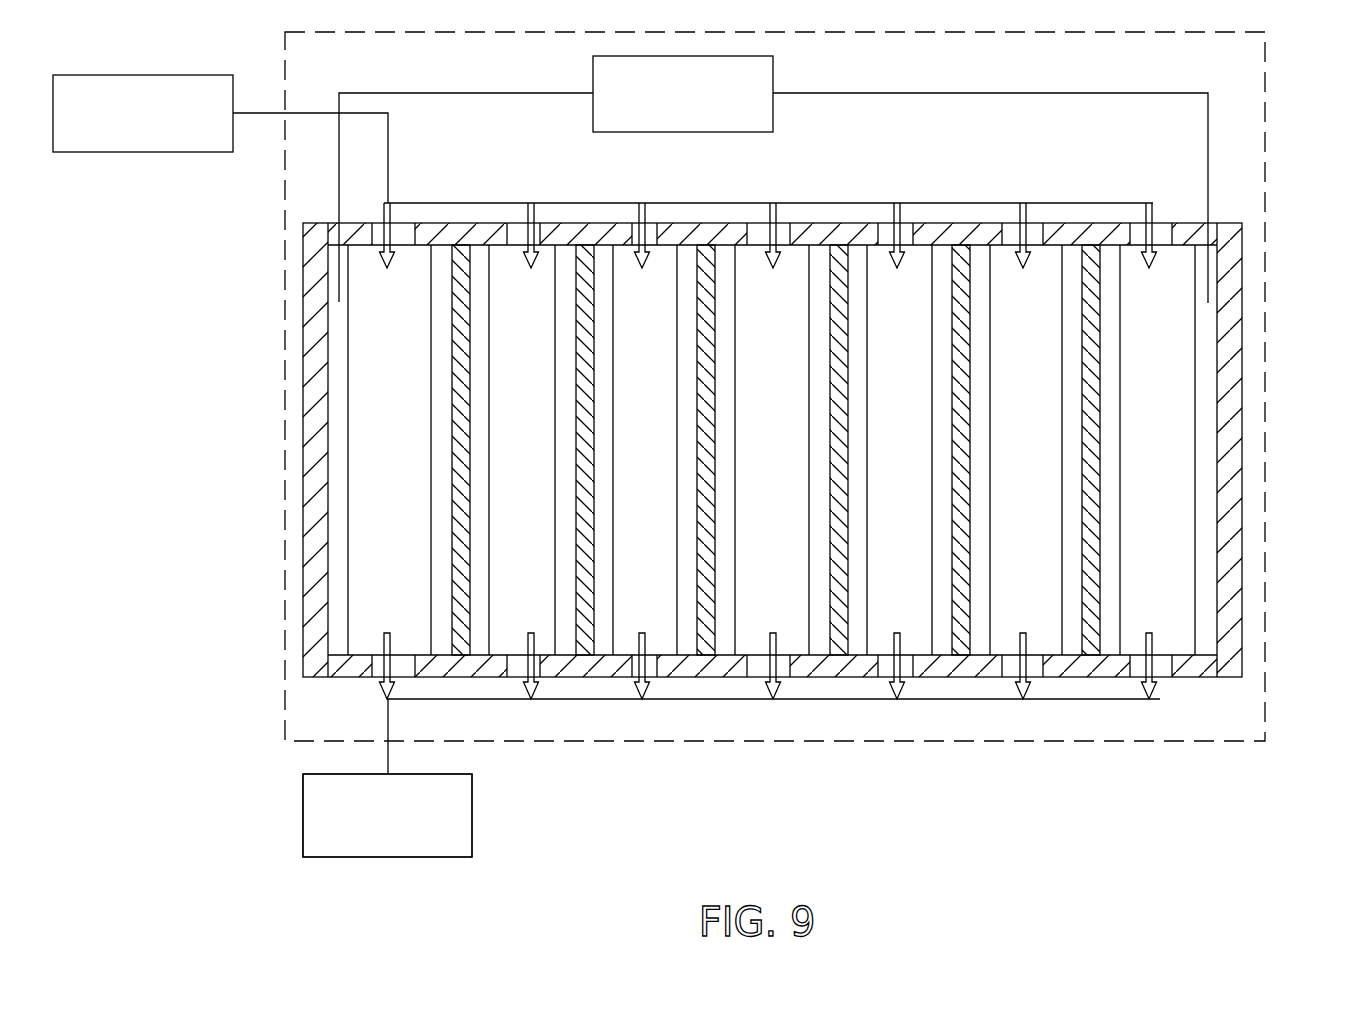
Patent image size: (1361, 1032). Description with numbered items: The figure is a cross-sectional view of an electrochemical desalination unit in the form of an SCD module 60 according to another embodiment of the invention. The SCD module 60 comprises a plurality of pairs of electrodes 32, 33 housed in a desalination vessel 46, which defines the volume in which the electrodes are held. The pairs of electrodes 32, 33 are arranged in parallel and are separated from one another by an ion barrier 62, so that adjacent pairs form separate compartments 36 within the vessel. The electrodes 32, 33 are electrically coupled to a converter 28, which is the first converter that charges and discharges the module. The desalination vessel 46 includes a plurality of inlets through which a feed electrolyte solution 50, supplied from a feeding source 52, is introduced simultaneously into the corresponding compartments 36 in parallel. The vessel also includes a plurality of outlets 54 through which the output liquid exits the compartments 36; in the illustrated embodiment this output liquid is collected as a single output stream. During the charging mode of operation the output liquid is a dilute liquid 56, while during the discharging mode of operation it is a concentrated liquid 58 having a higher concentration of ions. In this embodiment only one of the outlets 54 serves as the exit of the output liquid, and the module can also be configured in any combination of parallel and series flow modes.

The converter 28 is at (773, 121).
The electrode 32 is at (342, 398).
The electrode 33 is at (440, 398).
The compartment 36 is at (543, 262).
The desalination vessel 46 is at (316, 505).
The feed electrolyte solution 50 is at (388, 133).
The feeding source 52 is at (143, 75).
The outlet 54 is at (375, 667).
The dilute liquid 56 is at (472, 815).
The concentrated liquid 58 is at (387, 815).
The SCD module 60 is at (1265, 175).
The ion barrier 62 is at (463, 497).